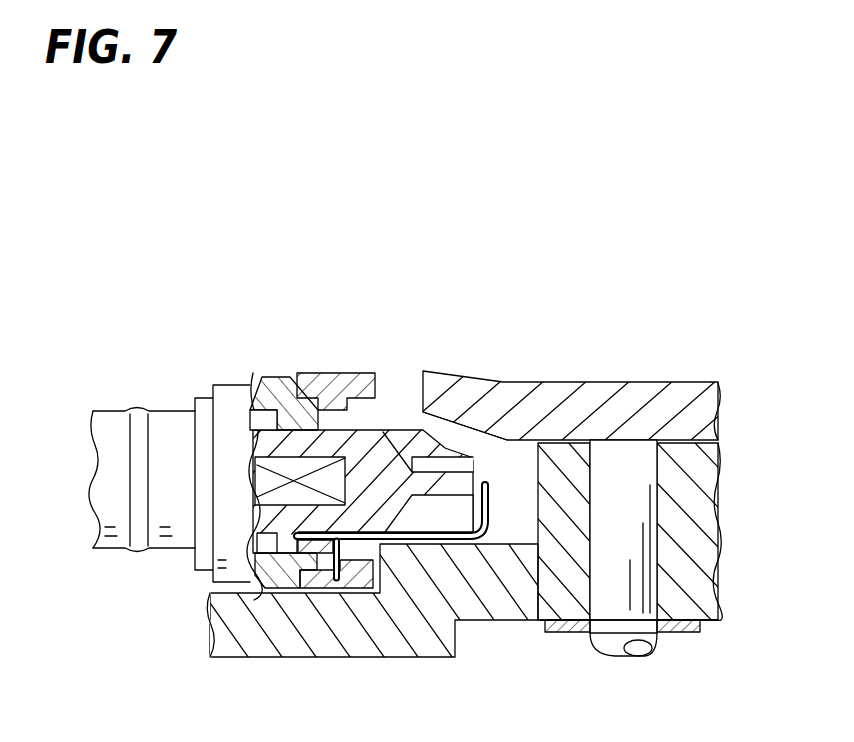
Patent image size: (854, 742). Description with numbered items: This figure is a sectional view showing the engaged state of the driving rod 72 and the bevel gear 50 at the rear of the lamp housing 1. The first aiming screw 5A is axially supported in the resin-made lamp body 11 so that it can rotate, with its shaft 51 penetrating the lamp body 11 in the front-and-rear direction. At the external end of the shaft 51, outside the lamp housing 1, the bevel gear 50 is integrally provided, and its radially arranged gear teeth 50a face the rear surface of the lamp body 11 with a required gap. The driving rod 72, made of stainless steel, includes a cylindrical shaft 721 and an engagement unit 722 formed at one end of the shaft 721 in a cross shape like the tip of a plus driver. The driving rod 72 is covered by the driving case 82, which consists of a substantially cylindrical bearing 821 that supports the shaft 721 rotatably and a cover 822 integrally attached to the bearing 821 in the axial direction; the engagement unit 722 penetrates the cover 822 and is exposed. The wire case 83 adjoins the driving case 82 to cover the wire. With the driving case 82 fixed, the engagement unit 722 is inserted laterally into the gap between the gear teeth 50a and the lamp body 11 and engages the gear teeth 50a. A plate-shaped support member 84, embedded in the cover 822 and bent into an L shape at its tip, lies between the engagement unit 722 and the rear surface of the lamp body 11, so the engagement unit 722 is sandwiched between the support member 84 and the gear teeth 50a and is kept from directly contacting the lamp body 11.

The lamp housing 1 is at (720, 623).
The first aiming screw 5A is at (614, 487).
The lamp body 11 is at (353, 633).
The bevel gear 50 is at (580, 389).
The gear teeth 50a is at (488, 437).
The shaft 51 is at (590, 652).
The driving rod 72 is at (303, 460).
The shaft 721 is at (257, 541).
The engagement unit 722 is at (428, 432).
The driving case 82 is at (288, 430).
The bearing 821 is at (265, 380).
The cover 822 is at (306, 373).
The wire case 83 is at (110, 437).
The support member 84 is at (486, 545).